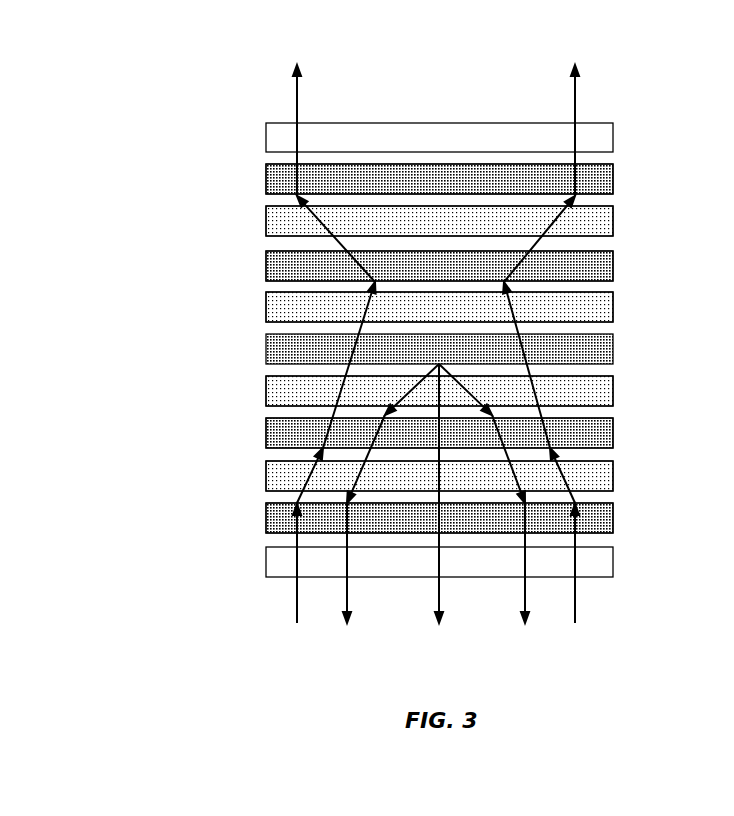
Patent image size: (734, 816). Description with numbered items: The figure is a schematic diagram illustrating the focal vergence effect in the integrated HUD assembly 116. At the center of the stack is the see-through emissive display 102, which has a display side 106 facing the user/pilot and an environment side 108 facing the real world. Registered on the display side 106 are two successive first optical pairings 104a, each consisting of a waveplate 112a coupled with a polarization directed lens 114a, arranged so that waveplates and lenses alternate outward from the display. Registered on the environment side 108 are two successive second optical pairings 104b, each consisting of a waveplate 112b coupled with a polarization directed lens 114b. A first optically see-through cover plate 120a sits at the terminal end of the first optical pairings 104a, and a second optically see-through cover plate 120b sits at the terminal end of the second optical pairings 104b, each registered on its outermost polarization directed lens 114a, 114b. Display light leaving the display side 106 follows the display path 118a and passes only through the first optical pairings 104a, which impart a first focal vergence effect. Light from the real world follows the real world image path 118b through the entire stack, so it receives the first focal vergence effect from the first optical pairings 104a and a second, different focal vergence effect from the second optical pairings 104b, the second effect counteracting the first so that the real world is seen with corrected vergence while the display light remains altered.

The integrated HUD assembly 116 is at (179, 86).
The environment side 108 is at (448, 108).
The display side 106 is at (478, 613).
The see-through emissive display 102 is at (608, 349).
The first optical pairing 104a is at (258, 373).
The second optical pairing 104b is at (258, 162).
The waveplate 112a is at (608, 391).
The waveplate 112b is at (608, 222).
The polarization directed lens 114a is at (608, 433).
The polarization directed lens 114b is at (608, 180).
The display path 118a is at (349, 598).
The real world image path 118b is at (578, 596).
The first optically see-through cover plate 120a is at (608, 562).
The second optically see-through cover plate 120b is at (608, 137).